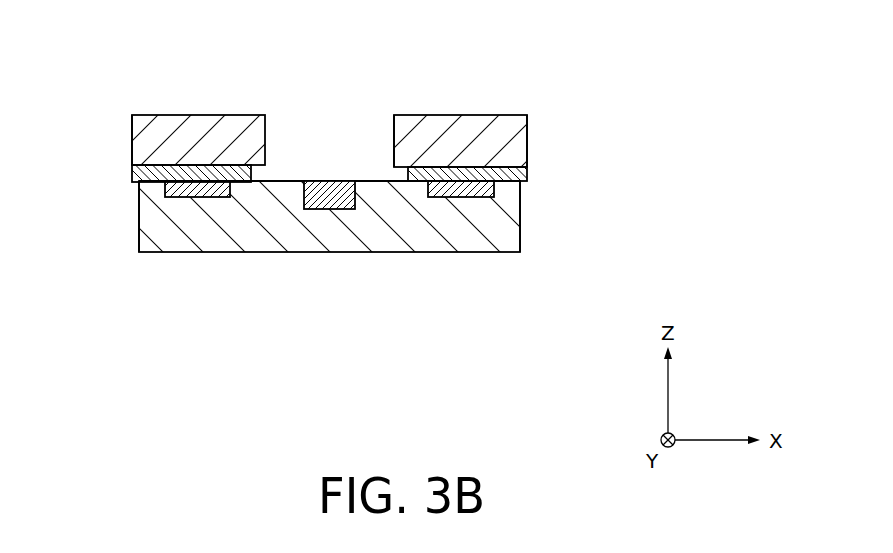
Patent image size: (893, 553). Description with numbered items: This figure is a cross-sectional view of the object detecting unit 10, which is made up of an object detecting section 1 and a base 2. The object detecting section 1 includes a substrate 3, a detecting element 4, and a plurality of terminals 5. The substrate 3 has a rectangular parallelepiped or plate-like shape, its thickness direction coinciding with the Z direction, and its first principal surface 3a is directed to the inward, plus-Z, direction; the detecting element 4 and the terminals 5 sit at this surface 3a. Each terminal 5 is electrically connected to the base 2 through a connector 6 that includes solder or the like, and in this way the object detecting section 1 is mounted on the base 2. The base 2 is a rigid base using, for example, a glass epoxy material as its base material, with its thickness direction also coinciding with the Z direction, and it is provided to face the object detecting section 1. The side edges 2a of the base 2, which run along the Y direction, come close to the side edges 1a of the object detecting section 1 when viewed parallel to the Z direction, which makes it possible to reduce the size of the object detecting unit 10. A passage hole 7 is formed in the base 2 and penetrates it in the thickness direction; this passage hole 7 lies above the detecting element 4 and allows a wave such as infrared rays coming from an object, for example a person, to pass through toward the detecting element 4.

The object detecting section 1 is at (508, 261).
The side edge of object detecting section 1a is at (139, 233).
The base 2 is at (527, 133).
The side edge of base 2a is at (132, 133).
The substrate 3 is at (520, 217).
The first principal surface 3a is at (291, 181).
The detecting element 4 is at (331, 198).
The terminal 5 is at (191, 189).
The connector 6 is at (132, 176).
The passage hole 7 is at (394, 133).
The object detecting unit 10 is at (524, 86).